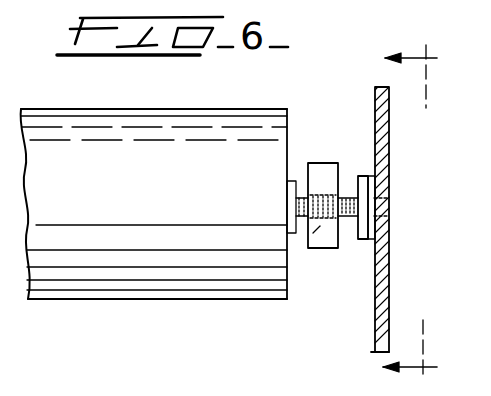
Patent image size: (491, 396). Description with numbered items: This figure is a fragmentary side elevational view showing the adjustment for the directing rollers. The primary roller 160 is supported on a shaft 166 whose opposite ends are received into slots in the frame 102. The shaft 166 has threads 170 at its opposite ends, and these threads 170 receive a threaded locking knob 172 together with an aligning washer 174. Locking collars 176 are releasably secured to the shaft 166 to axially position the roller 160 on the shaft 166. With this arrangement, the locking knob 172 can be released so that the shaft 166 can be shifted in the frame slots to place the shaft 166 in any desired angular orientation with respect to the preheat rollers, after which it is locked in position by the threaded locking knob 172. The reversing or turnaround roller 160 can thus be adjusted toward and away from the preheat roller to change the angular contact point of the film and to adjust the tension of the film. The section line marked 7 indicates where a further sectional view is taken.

The primary roller 160 is at (103, 301).
The threads 170 is at (290, 246).
The locking collars 176 is at (289, 194).
The shaft 166 is at (389, 197).
The threaded locking knob 172 is at (313, 249).
The aligning washer 174 is at (361, 240).
The frame 102 is at (390, 293).
The section line 7- 7 is at (413, 202).